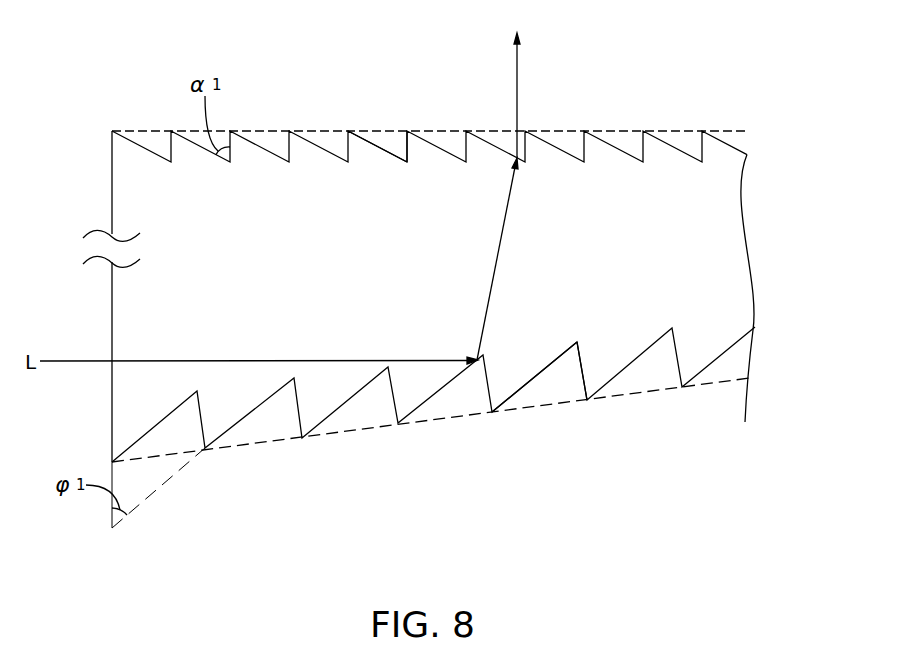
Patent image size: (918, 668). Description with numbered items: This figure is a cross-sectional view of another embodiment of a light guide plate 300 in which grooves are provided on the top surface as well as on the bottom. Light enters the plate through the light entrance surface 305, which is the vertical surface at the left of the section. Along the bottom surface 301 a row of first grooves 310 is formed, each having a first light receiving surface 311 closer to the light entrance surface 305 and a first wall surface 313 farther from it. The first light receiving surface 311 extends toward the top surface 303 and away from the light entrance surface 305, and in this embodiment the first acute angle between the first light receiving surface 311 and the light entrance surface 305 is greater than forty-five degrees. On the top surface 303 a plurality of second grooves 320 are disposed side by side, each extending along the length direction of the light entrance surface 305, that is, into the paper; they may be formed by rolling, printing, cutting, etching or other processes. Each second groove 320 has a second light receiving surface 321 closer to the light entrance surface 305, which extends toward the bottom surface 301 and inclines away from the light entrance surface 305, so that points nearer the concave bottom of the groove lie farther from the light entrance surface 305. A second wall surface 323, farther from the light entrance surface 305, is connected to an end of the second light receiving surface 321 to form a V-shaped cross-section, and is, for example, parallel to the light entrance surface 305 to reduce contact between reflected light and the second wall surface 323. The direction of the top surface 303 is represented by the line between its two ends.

The light guide plate 300 is at (126, 41).
The bottom surface 301 is at (717, 384).
The top surface 303 is at (451, 133).
The light entrance surface 305 is at (112, 175).
The first groove 310 is at (558, 387).
The first light receiving surface 311 is at (521, 390).
The first wall surface 313 is at (582, 392).
The second groove 320 is at (388, 143).
The second light receiving surface 321 is at (367, 133).
The second wall surface 323 is at (406, 142).